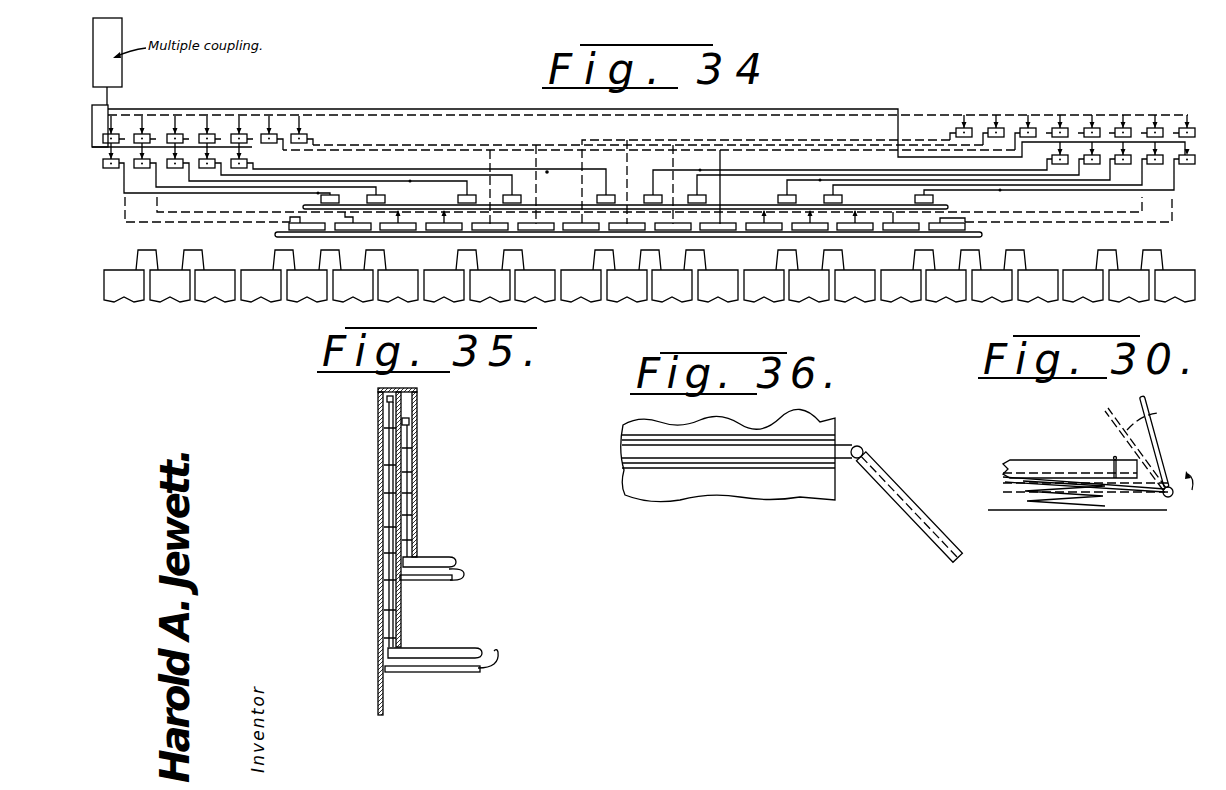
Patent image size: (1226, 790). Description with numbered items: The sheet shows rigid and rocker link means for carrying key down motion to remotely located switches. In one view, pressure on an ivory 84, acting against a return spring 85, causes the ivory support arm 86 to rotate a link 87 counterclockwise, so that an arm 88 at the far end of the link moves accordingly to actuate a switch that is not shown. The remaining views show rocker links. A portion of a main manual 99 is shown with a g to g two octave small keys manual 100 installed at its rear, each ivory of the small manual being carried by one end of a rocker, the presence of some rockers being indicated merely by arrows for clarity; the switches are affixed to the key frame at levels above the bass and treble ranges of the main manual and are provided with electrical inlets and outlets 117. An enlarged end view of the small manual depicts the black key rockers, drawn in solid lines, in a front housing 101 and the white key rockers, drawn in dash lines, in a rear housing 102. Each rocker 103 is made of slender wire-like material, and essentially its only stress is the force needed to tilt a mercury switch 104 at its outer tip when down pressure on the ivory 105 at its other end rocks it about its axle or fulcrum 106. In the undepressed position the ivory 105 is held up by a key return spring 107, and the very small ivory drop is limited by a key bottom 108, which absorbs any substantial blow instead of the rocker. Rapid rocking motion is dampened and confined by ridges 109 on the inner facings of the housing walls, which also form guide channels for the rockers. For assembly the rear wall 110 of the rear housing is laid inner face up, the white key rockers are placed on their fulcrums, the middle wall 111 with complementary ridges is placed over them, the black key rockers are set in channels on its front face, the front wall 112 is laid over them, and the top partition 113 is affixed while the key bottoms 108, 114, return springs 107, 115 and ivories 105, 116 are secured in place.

In FIG. 34, the main manual 99 is at (252, 308).
In FIG. 34, the small keys manual 100 is at (586, 237).
In FIG. 34, the rocker 103 is at (547, 172).
In FIG. 36, the rocker 103 is at (845, 443).
In FIG. 34, the mercury switch 104 is at (256, 164).
In FIG. 35, the mercury switch 104 is at (409, 421).
In FIG. 34, the ivory 105 is at (607, 195).
In FIG. 35, the ivory 105 is at (432, 557).
In FIG. 34, the axle or fulcrum 106 is at (547, 174).
In FIG. 35, the axle or fulcrum 106 is at (407, 450).
In FIG. 36, the axle or fulcrum 106 is at (863, 447).
In FIG. 34, the electrical inlets and outlets 117 is at (299, 128).
In FIG. 35, the front housing 101 is at (410, 402).
In FIG. 36, the front housing 101 is at (632, 494).
In FIG. 35, the rear housing 102 is at (390, 420).
In FIG. 35, the key return spring 107 is at (458, 578).
In FIG. 35, the key bottom 108 is at (430, 582).
In FIG. 36, the ridges 109 is at (790, 406).
In FIG. 35, the rear wall 110 is at (389, 494).
In FIG. 35, the middle wall 111 is at (390, 474).
In FIG. 35, the front wall 112 is at (410, 470).
In FIG. 35, the top partition 113 is at (384, 389).
In FIG. 35, the key bottom 114 is at (497, 669).
In FIG. 35, the return spring 115 is at (445, 673).
In FIG. 35, the ivory 116 is at (425, 648).
In FIG. 30, the ivory 84 is at (1056, 462).
In FIG. 30, the return spring 85 is at (1075, 507).
In FIG. 30, the ivory support arm 86 is at (1143, 495).
In FIG. 30, the link 87 is at (1172, 497).
In FIG. 30, the arm 88 is at (1158, 413).